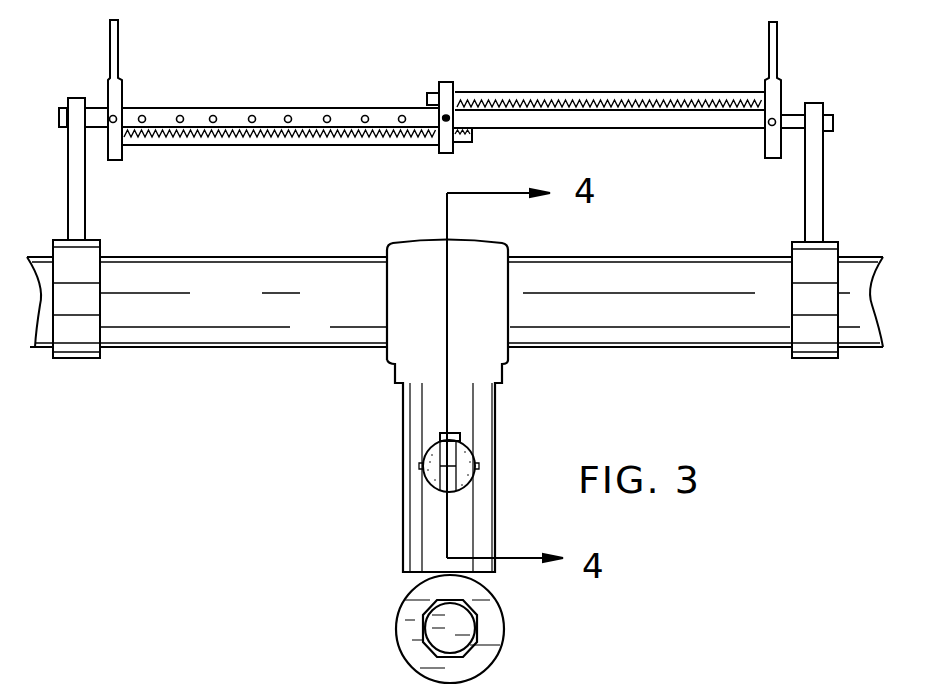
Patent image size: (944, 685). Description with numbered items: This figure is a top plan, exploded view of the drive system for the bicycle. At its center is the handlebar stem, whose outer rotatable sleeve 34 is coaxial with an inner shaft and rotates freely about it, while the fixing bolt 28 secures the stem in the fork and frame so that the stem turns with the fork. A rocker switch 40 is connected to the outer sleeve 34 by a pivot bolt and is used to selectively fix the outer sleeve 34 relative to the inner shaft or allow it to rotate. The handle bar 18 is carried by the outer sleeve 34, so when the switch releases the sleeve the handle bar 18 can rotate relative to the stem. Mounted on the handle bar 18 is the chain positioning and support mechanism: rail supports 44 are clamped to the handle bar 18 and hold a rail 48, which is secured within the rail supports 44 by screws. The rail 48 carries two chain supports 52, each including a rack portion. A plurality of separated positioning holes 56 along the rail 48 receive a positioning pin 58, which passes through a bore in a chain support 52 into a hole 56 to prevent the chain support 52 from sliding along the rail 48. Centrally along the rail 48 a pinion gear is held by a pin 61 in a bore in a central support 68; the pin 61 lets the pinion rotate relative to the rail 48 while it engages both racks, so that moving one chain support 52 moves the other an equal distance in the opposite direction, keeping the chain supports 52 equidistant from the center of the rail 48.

The handle bar 18 is at (232, 262).
The fixing bolt 28 is at (466, 625).
The outer rotatable sleeve 34 is at (488, 414).
The rocker switch 40 is at (436, 478).
The rail supports 44 is at (80, 200).
The rail 48 is at (735, 120).
The chain supports 52 is at (118, 44).
The positioning holes 56 is at (365, 115).
The positioning pin 58 is at (116, 117).
The pin 61 is at (450, 118).
The central support 68 is at (447, 82).